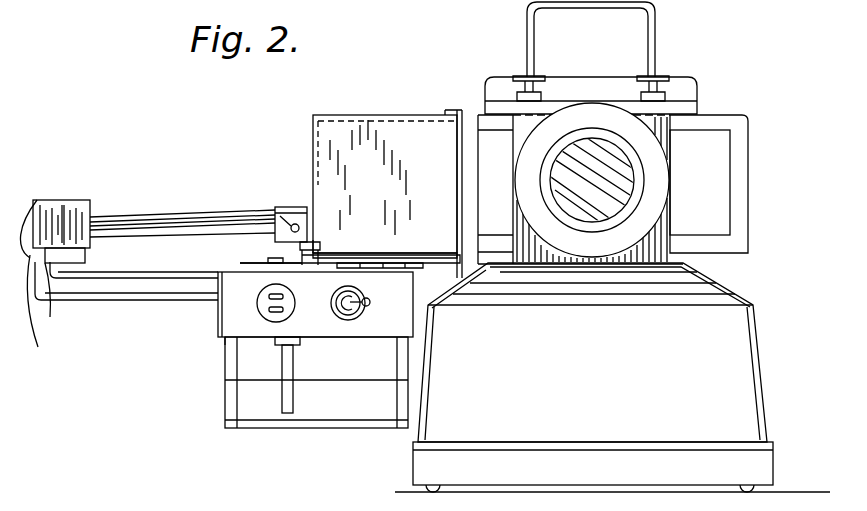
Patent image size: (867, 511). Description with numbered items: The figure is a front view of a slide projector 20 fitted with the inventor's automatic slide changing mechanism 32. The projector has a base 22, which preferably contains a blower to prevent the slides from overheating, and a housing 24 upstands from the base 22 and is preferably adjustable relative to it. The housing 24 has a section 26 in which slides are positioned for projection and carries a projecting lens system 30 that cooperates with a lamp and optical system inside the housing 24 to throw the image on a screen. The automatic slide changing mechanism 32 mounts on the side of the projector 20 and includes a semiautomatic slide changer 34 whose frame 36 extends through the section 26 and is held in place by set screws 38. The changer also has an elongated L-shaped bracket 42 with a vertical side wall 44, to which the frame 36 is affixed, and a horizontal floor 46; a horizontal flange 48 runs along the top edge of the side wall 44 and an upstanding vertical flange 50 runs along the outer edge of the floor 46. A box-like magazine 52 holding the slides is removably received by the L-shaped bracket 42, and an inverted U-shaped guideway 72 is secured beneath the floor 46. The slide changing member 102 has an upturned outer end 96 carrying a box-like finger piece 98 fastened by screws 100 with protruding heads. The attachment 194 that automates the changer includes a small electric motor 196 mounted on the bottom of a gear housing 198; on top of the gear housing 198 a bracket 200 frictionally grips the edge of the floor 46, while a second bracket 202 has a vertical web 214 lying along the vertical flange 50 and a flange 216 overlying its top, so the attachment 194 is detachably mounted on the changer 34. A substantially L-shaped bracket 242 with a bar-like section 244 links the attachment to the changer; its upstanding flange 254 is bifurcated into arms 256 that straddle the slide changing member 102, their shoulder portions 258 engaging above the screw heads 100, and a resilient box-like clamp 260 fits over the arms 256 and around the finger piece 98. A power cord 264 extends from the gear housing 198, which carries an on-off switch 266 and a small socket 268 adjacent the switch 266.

The slide projector 20 is at (760, 298).
The base 22 is at (420, 468).
The housing 24 is at (642, 22).
The section 26 is at (678, 88).
The projecting lens system 30 is at (633, 163).
The automatic slide changing mechanism 32 is at (290, 188).
The semiautomatic slide changer 34 is at (255, 204).
The frame 36 is at (742, 145).
The set screws 38 is at (518, 76).
The L-shaped bracket 42 is at (455, 105).
The vertical side wall 44 is at (457, 210).
The horizontal floor 46 is at (423, 265).
The horizontal flange 48 is at (445, 112).
The vertical flange 50 is at (318, 252).
The magazine 52 is at (365, 115).
The U-shaped guideway 72 is at (290, 248).
The outer end of the inner slide 96 is at (80, 265).
The finger piece 98 is at (60, 210).
The screws 100 is at (58, 301).
The slide changing member 102 is at (125, 235).
The attachment 194 is at (256, 434).
The electric motor 196 is at (228, 410).
The gear housing 198 is at (220, 322).
The bracket 200 is at (373, 268).
The bracket 202 is at (268, 250).
The vertical web 214 is at (267, 310).
The flange 216 is at (313, 240).
The L-shaped bracket 242 is at (135, 306).
The bar-like section 244 is at (110, 299).
The upstanding flange 254 is at (47, 312).
The arms 256 is at (62, 200).
The shoulder portions 258 is at (37, 200).
The clamp 260 is at (78, 205).
The power cord 264 is at (293, 363).
The on-off switch 266 is at (368, 304).
The socket 268 is at (240, 340).